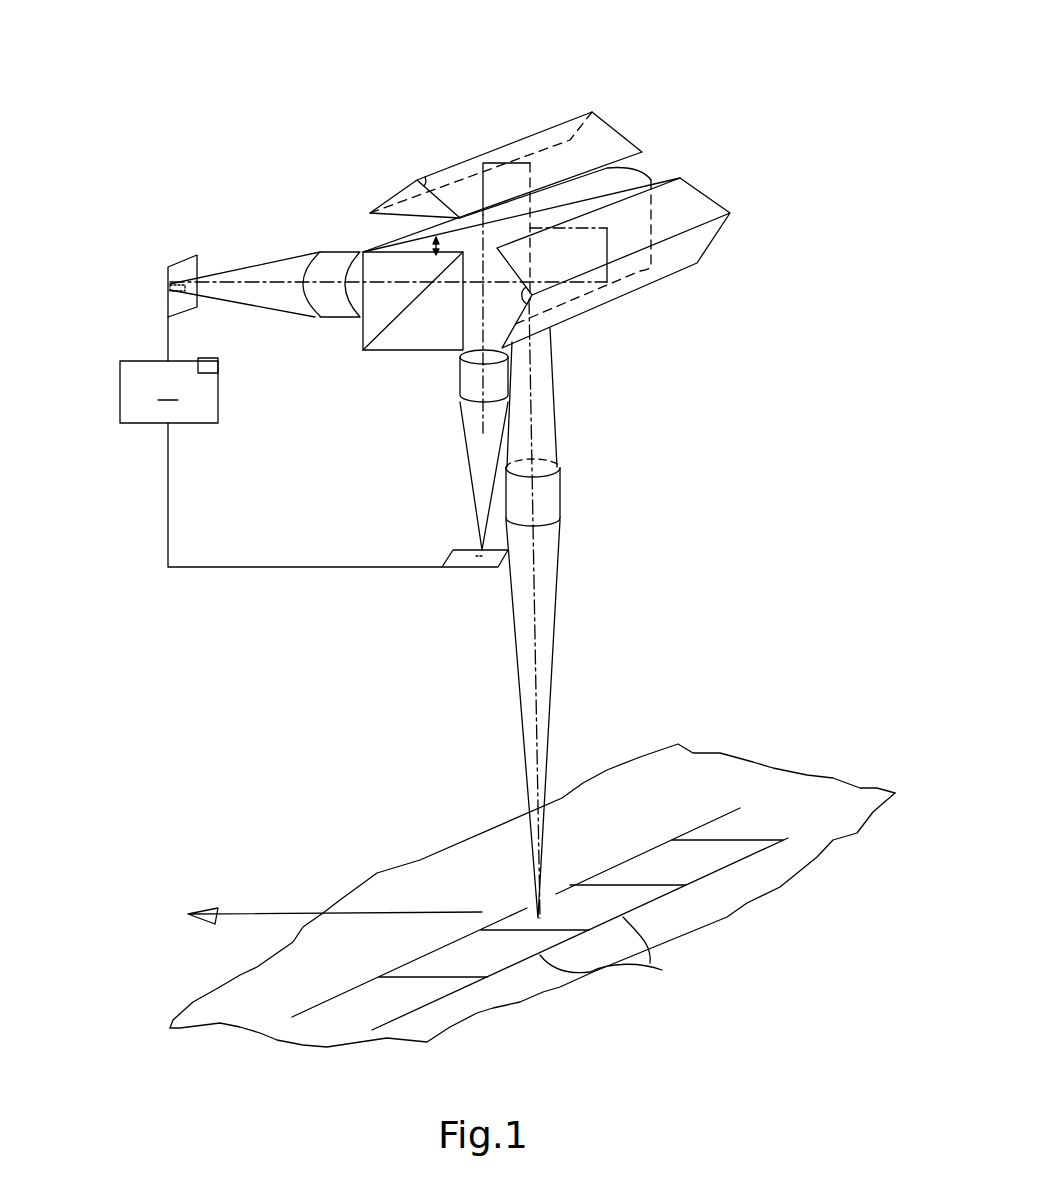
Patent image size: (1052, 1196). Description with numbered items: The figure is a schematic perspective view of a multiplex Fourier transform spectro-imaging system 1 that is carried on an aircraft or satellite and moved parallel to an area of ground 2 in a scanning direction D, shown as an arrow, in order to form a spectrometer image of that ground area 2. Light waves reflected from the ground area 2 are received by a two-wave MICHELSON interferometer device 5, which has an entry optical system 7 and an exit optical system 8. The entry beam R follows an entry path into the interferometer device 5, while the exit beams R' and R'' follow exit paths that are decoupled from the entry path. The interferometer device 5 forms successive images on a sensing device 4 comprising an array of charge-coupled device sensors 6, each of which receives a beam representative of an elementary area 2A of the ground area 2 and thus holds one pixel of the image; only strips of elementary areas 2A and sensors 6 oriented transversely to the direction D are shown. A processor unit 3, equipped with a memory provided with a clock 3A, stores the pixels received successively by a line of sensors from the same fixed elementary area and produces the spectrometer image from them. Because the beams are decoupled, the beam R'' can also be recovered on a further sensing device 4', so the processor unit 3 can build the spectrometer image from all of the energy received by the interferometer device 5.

The multiplex Fourier transform spectro-imaging system 1 is at (583, 560).
The ground area 2 is at (240, 1027).
The elementary area 2A is at (730, 870).
The processor unit 3 is at (120, 402).
The memory with clock 3A is at (219, 365).
The sensing device 4 is at (152, 257).
The sensing device 4' is at (446, 594).
The MICHELSON interferometer device 5 is at (667, 155).
The charge-coupled device sensors 6 is at (186, 282).
The entry optical system 7 is at (560, 490).
The exit optical system 8 is at (337, 252).
The entry beam R is at (581, 609).
The exit beam R' is at (388, 221).
The exit beam R'' is at (436, 450).
The scanning direction D is at (335, 928).